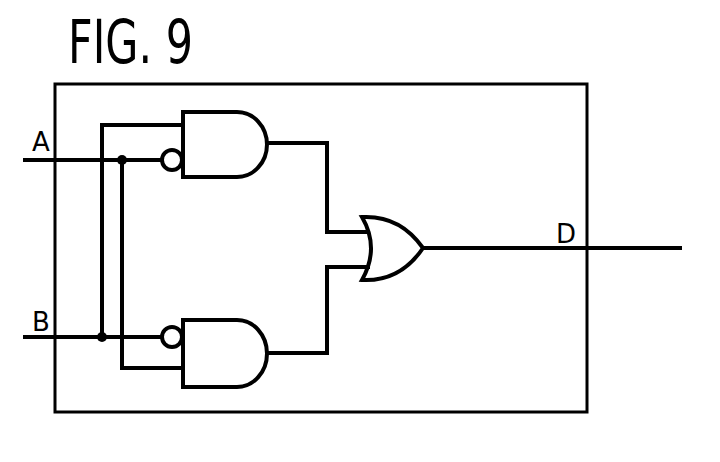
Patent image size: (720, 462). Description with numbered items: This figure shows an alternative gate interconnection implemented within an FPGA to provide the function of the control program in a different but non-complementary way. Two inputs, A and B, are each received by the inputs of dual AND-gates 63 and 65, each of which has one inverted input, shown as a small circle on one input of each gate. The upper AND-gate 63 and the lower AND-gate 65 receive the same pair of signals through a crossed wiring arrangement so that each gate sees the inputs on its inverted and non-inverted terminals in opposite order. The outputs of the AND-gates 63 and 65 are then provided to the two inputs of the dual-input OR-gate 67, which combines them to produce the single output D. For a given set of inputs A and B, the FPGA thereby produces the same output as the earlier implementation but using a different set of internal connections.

The AND-gate 63 is at (263, 121).
The AND-gate 65 is at (265, 330).
The dual-input OR-gate 67 is at (417, 232).